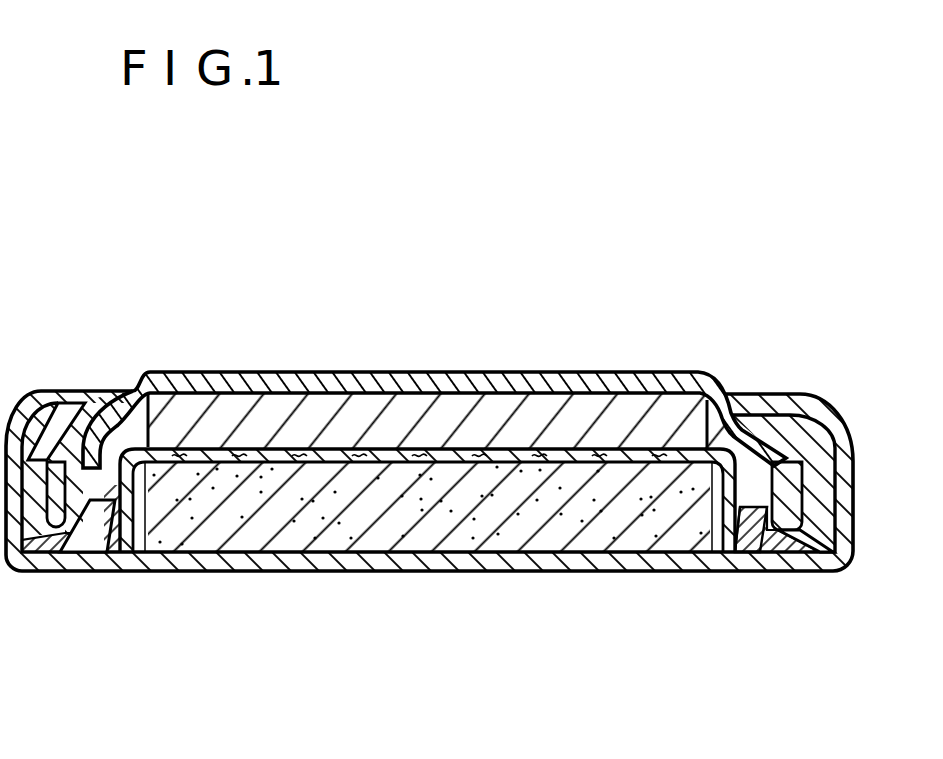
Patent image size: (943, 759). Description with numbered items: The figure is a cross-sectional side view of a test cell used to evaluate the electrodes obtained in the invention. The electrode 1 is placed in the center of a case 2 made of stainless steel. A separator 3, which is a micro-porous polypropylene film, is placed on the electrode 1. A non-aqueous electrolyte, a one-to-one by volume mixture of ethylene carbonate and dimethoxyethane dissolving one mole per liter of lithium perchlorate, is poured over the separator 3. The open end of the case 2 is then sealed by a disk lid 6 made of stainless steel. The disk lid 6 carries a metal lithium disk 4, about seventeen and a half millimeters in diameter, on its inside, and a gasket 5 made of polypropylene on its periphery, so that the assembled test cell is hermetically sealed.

The electrode 1 is at (665, 545).
The case 2 is at (802, 572).
The separator 3 is at (434, 385).
The metal lithium disk 4 is at (307, 400).
The gasket 5 is at (850, 463).
The disk lid 6 is at (450, 385).